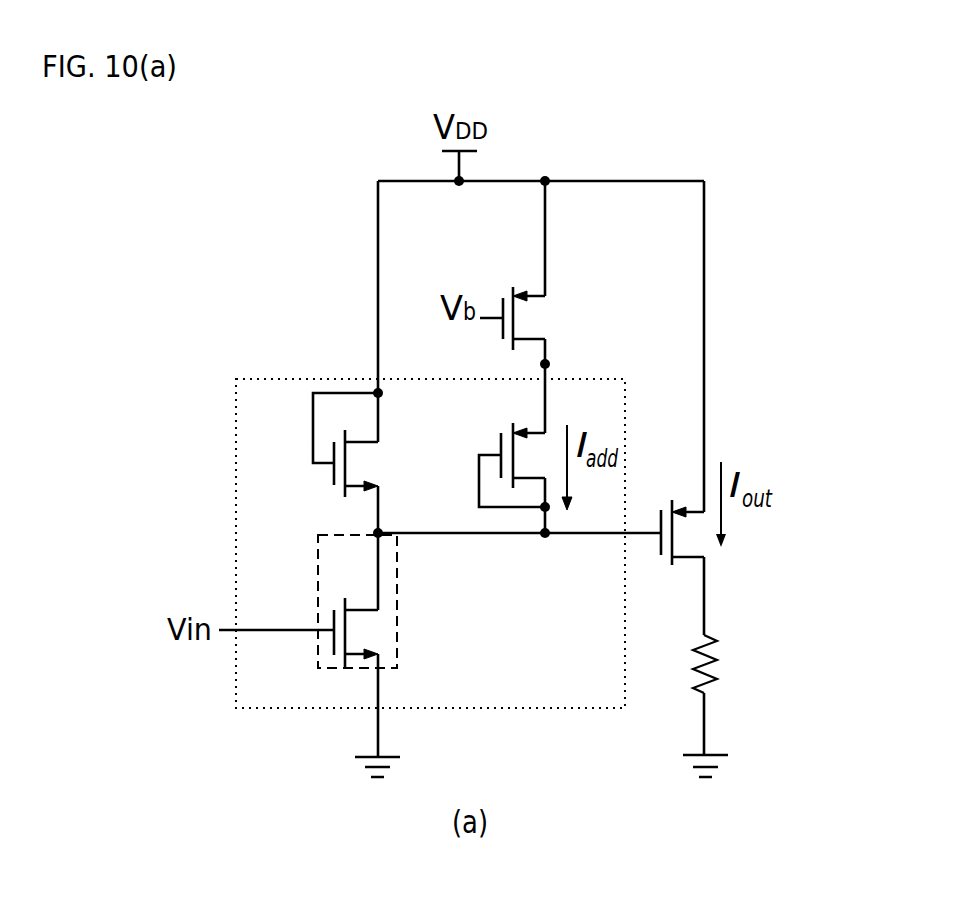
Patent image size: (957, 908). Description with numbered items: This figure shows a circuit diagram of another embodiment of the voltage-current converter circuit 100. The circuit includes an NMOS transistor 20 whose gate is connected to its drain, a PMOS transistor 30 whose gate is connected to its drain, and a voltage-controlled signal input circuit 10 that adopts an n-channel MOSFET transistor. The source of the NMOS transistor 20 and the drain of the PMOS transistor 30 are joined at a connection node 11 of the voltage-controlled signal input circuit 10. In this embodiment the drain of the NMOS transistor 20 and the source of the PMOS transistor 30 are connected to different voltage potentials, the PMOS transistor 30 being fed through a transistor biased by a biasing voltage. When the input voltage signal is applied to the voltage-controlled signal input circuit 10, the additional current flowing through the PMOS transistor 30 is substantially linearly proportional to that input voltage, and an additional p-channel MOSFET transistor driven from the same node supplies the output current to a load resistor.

The voltage-current converter circuit 100 is at (327, 370).
The NMOS transistor 20 is at (368, 430).
The PMOS transistor 30 is at (525, 430).
The connection node 11 is at (378, 533).
The voltage-controlled signal input circuit 10 is at (357, 670).